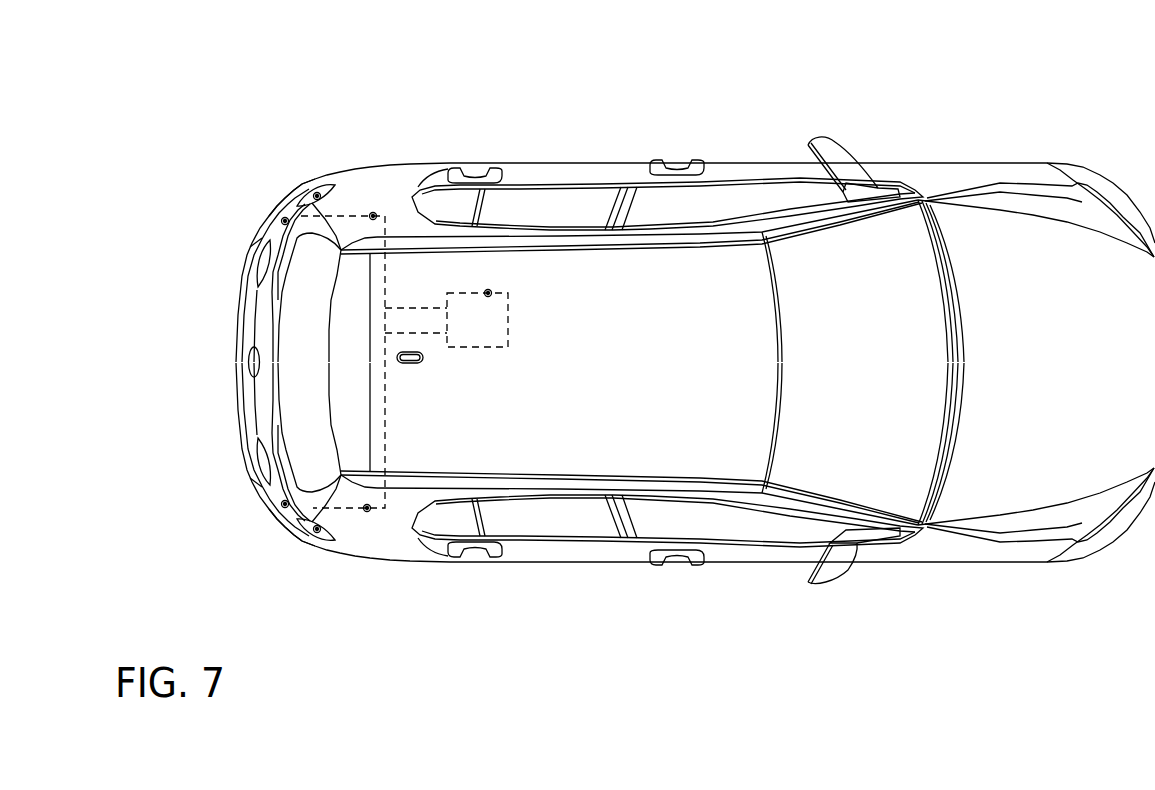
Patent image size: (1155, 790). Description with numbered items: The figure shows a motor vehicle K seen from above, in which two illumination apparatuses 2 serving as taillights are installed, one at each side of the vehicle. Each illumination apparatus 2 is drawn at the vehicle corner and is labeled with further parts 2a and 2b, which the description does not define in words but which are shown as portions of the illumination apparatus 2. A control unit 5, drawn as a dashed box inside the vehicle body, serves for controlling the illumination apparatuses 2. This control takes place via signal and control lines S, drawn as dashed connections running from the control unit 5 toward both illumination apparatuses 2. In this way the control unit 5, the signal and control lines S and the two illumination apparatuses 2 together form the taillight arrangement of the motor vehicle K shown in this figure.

The illumination apparatus 2 is at (283, 180).
The sensor 2a is at (316, 192).
The sensor 2b is at (281, 219).
The signal and control lines S is at (374, 212).
The control unit 5 is at (489, 289).
The motor vehicle K is at (880, 118).